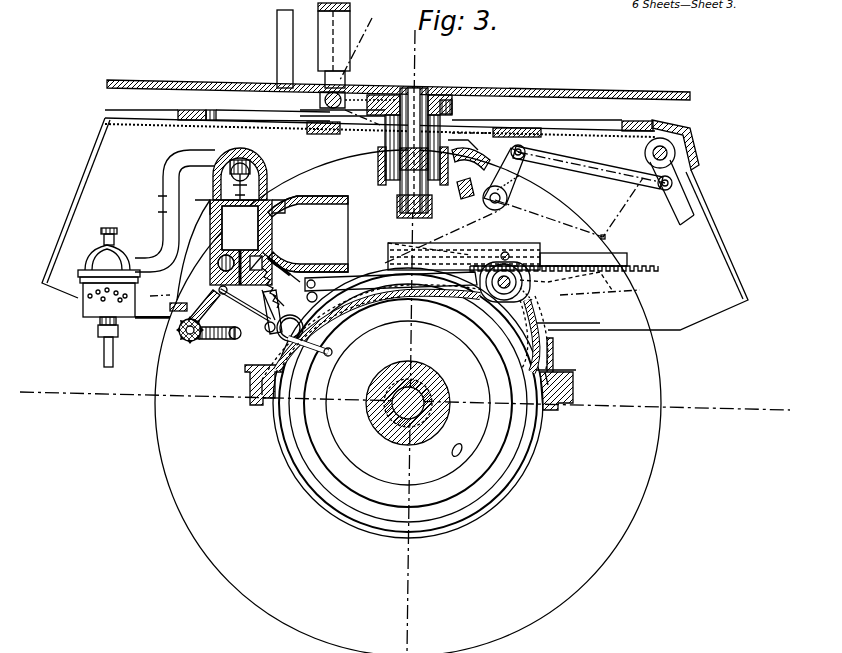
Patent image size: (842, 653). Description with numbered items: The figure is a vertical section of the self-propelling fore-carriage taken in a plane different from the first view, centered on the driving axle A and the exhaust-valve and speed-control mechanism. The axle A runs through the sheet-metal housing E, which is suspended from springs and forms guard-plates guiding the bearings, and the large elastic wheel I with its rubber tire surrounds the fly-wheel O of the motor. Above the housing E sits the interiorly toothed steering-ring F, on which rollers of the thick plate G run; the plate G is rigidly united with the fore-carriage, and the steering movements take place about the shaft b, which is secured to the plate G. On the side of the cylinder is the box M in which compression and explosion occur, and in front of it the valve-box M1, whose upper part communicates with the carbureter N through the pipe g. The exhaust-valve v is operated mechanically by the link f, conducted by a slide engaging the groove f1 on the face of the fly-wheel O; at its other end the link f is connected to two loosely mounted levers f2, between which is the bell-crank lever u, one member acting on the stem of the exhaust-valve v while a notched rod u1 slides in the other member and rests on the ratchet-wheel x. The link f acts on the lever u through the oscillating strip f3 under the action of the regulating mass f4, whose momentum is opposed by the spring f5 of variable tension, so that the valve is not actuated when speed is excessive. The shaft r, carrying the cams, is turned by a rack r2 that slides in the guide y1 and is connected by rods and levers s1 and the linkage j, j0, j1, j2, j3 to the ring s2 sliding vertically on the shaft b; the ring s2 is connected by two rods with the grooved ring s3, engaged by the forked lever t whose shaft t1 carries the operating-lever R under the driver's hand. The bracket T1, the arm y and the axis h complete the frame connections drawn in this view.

The operating-lever R is at (313, 45).
The shaft of the forked lever t1 is at (325, 92).
The forked lever t is at (360, 100).
The shaft b is at (420, 92).
The plate G is at (582, 90).
The steering-ring F is at (180, 110).
The sheet-metal housing E is at (395, 224).
The grooved ring s3 is at (452, 108).
The ring s2 is at (380, 172).
The lever s1 is at (510, 176).
The link j is at (612, 153).
The link j0 is at (640, 233).
The bent lever j1 is at (506, 176).
The pivot j2 is at (659, 138).
The arm j3 is at (672, 212).
The rack bar y1 is at (385, 275).
The rack r2 is at (627, 262).
The shaft r is at (540, 285).
The shaft axis h is at (395, 293).
The bearing bracket T1 is at (520, 305).
The arm y is at (314, 278).
The pipe g is at (163, 205).
The valve-box M1 is at (250, 145).
The exhaust-valve v is at (240, 250).
The box M is at (308, 234).
The spring f5 is at (292, 262).
The carbureter N is at (80, 300).
The ratchet-wheel x is at (185, 345).
The rod u1 is at (205, 303).
The bell-crank lever u is at (235, 312).
The levers f2 is at (225, 345).
The oscillating strip f3 is at (268, 338).
The regulating mass f4 is at (282, 312).
The link f is at (298, 310).
The groove f1 is at (320, 400).
The axle A is at (442, 400).
The fly-wheel O is at (457, 450).
The wheels I is at (408, 401).